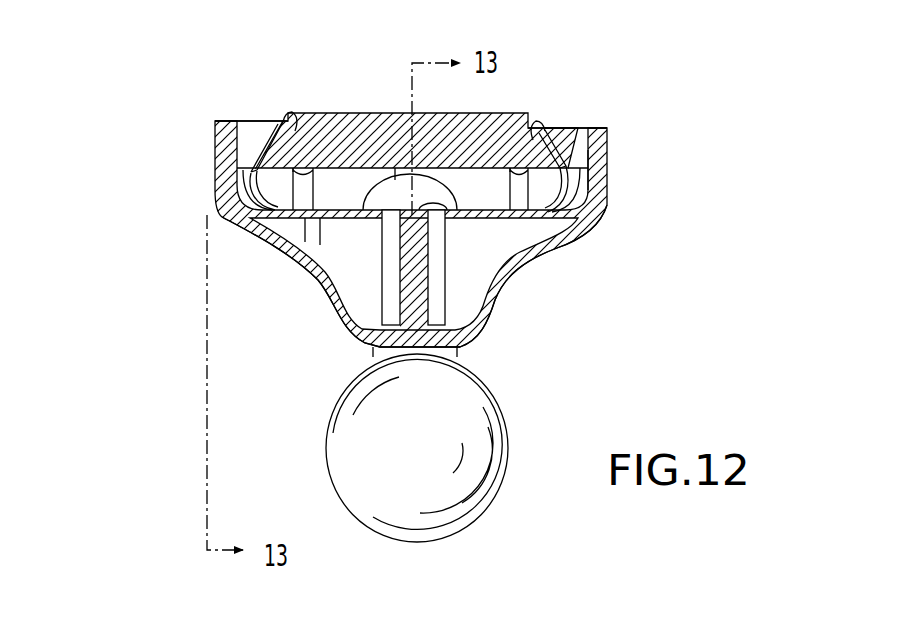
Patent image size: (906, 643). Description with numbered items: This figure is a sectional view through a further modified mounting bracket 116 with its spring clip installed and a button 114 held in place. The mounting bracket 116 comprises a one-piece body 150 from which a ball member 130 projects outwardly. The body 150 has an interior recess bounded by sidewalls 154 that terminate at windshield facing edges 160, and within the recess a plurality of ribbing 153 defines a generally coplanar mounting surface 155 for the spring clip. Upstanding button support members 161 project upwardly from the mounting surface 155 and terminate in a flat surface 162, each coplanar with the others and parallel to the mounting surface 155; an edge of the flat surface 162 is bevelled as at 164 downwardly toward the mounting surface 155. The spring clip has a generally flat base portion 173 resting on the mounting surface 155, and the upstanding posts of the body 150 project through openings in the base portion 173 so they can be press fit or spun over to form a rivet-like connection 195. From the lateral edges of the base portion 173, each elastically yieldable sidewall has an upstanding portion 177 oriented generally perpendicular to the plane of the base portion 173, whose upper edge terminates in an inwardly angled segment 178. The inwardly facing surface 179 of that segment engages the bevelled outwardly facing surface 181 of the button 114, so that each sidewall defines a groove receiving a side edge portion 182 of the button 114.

The button 114 is at (345, 120).
The mounting bracket 116 is at (489, 328).
The ball member 130 is at (481, 422).
The one-piece body 150 is at (341, 320).
The ribbing 153 is at (526, 221).
The sidewalls 154 is at (228, 147).
The mounting surface 155 is at (244, 224).
The windshield facing edges 160 is at (217, 120).
The upstanding button support members 161 is at (307, 194).
The flat surface 162 is at (288, 116).
The bevel 164 is at (301, 166).
The base portion 173 is at (498, 206).
The upstanding portion 177 is at (596, 184).
The inwardly angled segment 178 is at (262, 121).
The inwardly facing surface 179 is at (284, 120).
The bevelled outwardly facing surface 181 is at (270, 118).
The side edge portion 182 is at (250, 184).
The rivet-like connection 195 is at (395, 180).